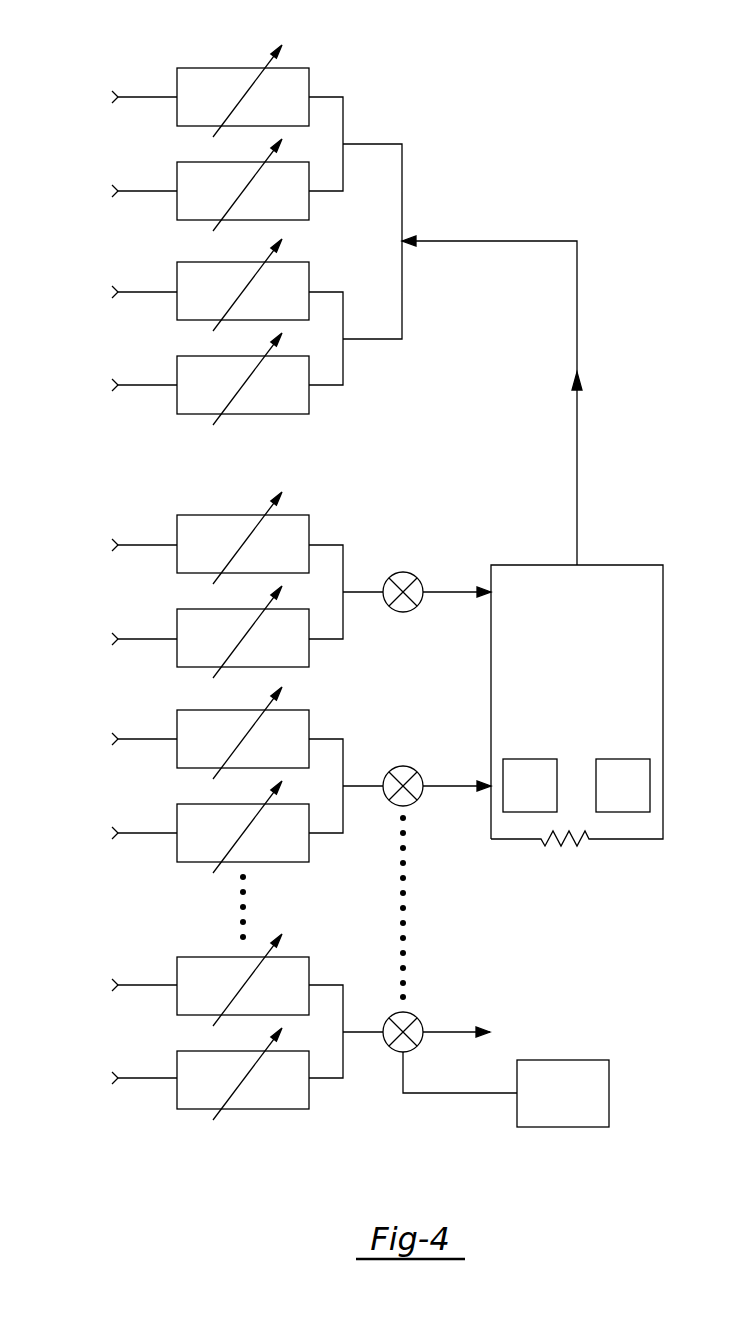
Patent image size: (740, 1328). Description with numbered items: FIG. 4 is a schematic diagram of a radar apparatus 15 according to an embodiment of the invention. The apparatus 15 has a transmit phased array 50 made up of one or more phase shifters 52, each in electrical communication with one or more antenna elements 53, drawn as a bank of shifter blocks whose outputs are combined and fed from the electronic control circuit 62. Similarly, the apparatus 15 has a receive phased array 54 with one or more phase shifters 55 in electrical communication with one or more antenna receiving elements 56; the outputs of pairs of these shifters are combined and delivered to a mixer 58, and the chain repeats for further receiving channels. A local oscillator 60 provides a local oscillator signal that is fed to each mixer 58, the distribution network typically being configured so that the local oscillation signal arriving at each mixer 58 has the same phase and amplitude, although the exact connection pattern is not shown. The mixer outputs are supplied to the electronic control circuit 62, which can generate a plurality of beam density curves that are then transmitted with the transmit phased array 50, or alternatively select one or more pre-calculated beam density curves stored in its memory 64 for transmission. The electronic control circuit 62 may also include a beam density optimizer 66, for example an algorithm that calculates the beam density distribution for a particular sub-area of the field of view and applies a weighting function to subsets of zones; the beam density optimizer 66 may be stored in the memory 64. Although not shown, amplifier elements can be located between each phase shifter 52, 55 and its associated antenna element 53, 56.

The radar apparatus 15 is at (563, 192).
The transmit phased array 50 is at (283, 216).
The phase shifter 52 is at (297, 66).
The antenna element 53 is at (121, 95).
The receive phased array 54 is at (280, 791).
The phase shifter 55 is at (298, 518).
The antenna receiving element 56 is at (121, 542).
The mixer 58 is at (405, 572).
The local oscillator 60 is at (573, 1058).
The electronic control circuit 62 is at (580, 675).
The memory 64 is at (612, 796).
The beam density optimizer 66 is at (519, 796).